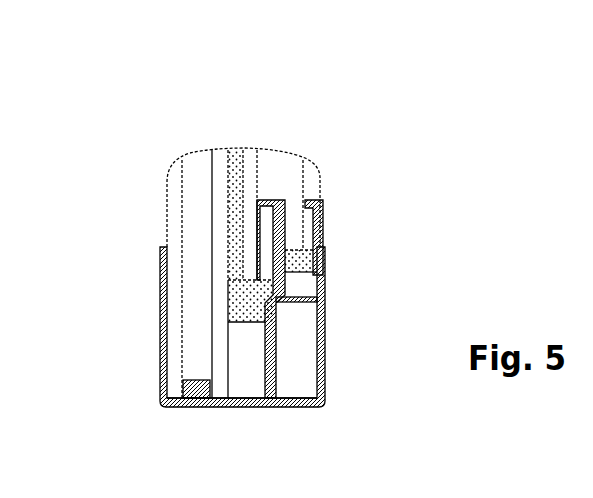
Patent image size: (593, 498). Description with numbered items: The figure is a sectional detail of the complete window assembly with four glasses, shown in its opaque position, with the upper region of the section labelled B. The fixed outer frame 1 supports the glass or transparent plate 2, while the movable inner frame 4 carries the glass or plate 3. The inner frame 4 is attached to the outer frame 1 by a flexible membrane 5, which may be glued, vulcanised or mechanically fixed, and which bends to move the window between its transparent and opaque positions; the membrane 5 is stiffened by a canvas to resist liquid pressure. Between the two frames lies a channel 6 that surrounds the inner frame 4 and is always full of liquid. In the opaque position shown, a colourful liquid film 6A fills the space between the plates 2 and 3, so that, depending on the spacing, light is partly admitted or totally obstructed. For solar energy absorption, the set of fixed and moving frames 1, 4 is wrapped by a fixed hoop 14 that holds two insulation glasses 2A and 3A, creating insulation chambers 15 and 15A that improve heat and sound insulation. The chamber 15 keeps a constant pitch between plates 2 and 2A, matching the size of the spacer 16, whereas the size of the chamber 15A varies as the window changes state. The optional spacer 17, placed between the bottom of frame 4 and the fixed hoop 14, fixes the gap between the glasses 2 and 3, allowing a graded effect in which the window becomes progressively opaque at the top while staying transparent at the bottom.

The region B is at (245, 33).
The fixed outer frame 1 is at (240, 408).
The glass or transparent plate 2 is at (221, 153).
The glass of insulation 2A is at (180, 173).
The glass or plate 3 is at (247, 157).
The glass of insulation 3A is at (312, 203).
The movable inner frame 4 is at (268, 200).
The flexible membrane 5 is at (322, 298).
The channel 6 is at (245, 307).
The colourful liquid film 6A is at (237, 263).
The fixed hoop 14 is at (303, 412).
The insulation chamber 15 is at (200, 223).
The insulation chamber 15A is at (297, 383).
The spacer 16 is at (187, 407).
The optional spacer 17 is at (313, 263).